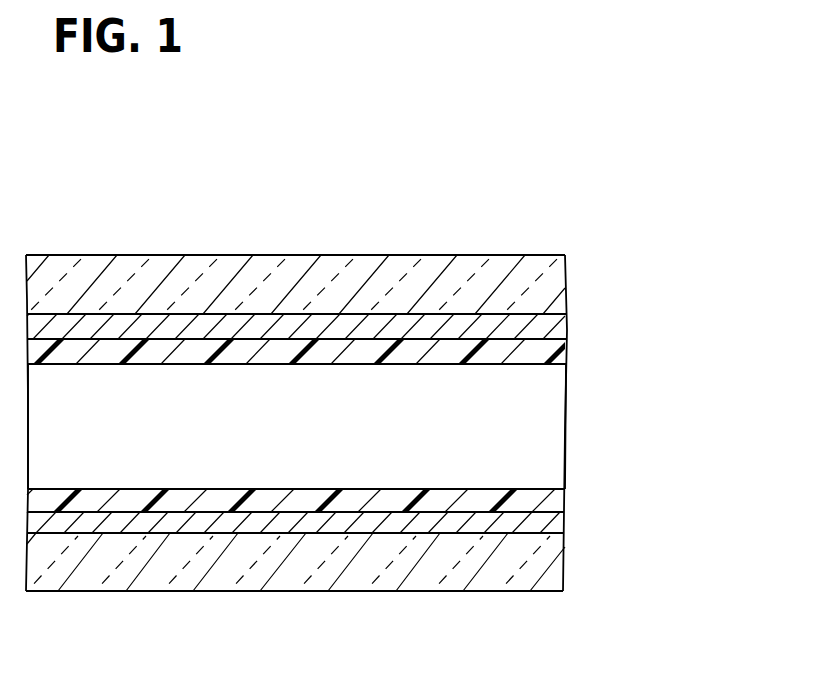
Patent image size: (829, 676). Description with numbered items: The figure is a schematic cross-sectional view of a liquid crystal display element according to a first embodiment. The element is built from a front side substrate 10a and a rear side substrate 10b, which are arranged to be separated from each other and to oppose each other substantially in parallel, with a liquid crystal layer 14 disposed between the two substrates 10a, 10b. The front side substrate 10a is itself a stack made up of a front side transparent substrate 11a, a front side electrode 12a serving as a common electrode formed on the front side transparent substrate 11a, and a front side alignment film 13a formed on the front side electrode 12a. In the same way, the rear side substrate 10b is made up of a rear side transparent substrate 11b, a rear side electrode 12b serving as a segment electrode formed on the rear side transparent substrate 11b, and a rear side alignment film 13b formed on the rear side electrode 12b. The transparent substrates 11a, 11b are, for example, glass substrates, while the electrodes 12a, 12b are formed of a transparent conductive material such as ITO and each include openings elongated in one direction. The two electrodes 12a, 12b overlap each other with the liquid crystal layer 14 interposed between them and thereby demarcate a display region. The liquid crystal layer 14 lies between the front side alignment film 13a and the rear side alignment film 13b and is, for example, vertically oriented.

The front side substrate 10a is at (692, 263).
The rear side substrate 10b is at (692, 472).
The front side transparent substrate 11a is at (552, 279).
The rear side transparent substrate 11b is at (545, 560).
The front side electrode 12a is at (552, 323).
The rear side electrode 12b is at (552, 522).
The front side alignment film 13a is at (540, 353).
The rear side alignment film 13b is at (552, 497).
The liquid crystal layer 14 is at (552, 436).